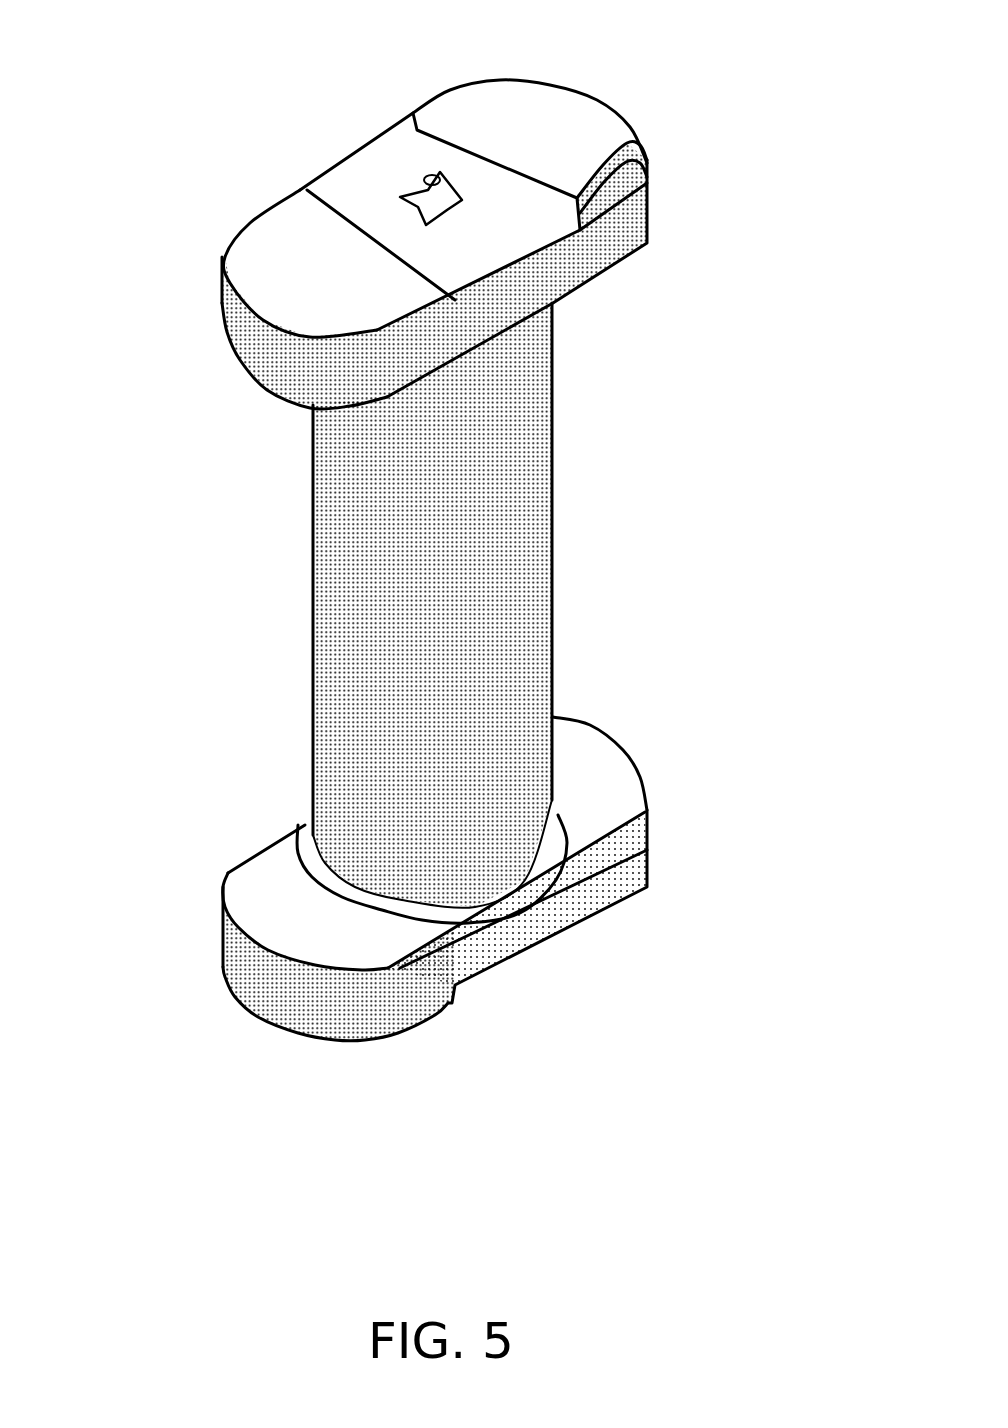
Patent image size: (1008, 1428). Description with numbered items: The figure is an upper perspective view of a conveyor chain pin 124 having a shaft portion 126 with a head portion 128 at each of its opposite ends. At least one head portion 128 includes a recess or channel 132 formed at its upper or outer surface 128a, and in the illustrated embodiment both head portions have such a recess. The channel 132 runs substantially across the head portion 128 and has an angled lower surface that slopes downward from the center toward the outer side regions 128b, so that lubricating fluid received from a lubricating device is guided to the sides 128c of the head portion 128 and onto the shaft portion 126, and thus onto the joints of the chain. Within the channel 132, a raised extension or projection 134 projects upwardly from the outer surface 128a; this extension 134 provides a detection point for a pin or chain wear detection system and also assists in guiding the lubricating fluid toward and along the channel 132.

The conveyor chain pin 124 is at (750, 329).
The shaft portion 126 is at (530, 553).
The head portion 128 is at (555, 118).
The upper or outer surface 128a is at (313, 247).
The outer side regions 128b is at (570, 207).
The sides of head portion 128c is at (572, 279).
The recess or channel 132 is at (387, 167).
The raised extension or projection 134 is at (445, 178).